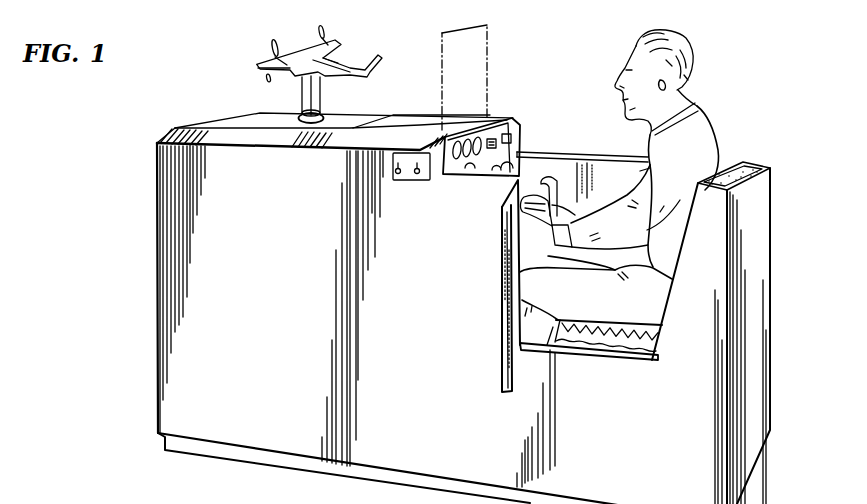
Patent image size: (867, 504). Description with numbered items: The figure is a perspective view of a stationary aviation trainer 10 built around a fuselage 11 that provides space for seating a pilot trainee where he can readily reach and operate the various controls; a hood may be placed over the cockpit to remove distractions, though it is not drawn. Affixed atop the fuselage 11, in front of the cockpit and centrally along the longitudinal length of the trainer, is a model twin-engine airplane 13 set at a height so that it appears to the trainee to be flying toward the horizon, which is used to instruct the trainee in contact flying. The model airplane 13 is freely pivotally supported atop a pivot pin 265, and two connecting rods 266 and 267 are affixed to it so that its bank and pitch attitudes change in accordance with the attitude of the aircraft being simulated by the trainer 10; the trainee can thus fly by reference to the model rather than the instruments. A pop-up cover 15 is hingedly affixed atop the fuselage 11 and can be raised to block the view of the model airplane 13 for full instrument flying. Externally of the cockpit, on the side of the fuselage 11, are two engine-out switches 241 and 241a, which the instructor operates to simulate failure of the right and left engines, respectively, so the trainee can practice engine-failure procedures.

The stationary aviation trainer 10 is at (561, 136).
The fuselage 11 is at (765, 189).
The model airplane 13 is at (367, 14).
The pop-up cover 15 is at (412, 121).
The engine-out switch 241 is at (398, 174).
The engine-out switch 241a is at (418, 176).
The pivot pin 265 is at (269, 93).
The connecting rod 266 is at (262, 105).
The connecting rod 267 is at (421, 109).